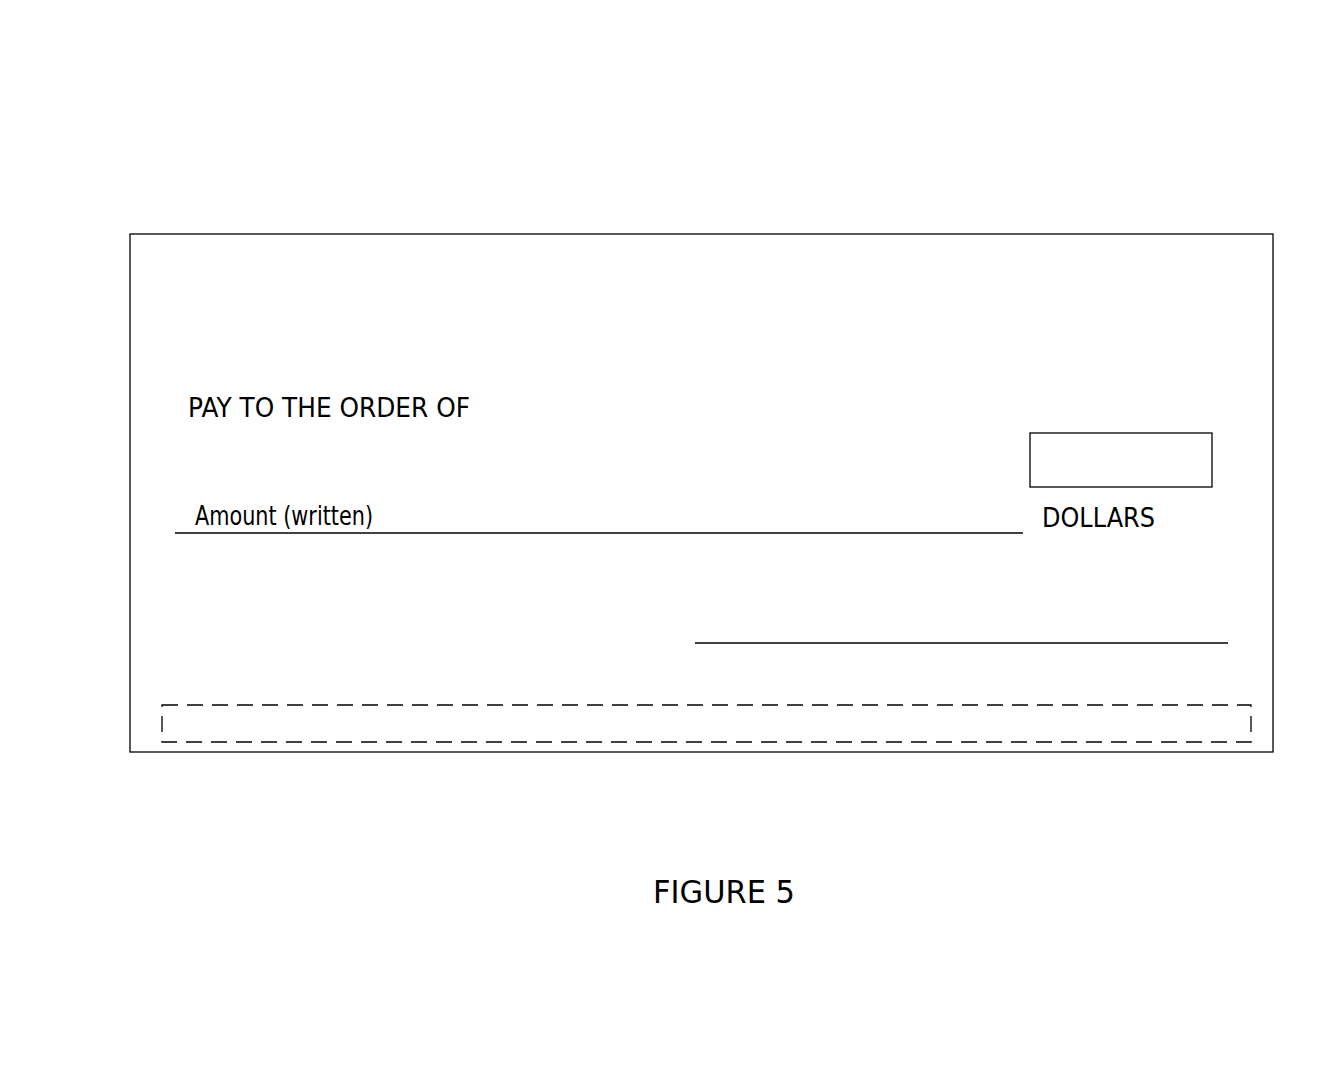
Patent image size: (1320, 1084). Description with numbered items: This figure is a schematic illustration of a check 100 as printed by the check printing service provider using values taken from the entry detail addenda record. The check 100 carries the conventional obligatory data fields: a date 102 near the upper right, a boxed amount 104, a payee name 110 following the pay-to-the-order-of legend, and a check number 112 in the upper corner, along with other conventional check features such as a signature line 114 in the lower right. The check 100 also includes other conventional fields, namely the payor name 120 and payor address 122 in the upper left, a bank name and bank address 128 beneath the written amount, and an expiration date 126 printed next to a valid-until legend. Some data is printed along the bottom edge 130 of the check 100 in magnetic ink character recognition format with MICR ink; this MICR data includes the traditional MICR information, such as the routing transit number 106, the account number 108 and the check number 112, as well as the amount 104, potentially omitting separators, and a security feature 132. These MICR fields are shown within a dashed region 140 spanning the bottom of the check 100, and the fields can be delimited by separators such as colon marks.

The check 100 is at (824, 158).
The date 102 is at (1008, 310).
The amount 104 is at (1203, 433).
The routing transit number 106 is at (238, 737).
The account number 108 is at (508, 737).
The payee name 110 is at (568, 392).
The check number 112 is at (1210, 252).
The signature line 114 is at (1007, 644).
The payor name 120 is at (302, 259).
The payor address 122 is at (333, 303).
The expiration date 126 is at (1100, 387).
The bank name and bank address 128 is at (327, 608).
The bottom edge 130 is at (647, 753).
The security feature 132 is at (1132, 737).
The MICR region 140 is at (160, 742).